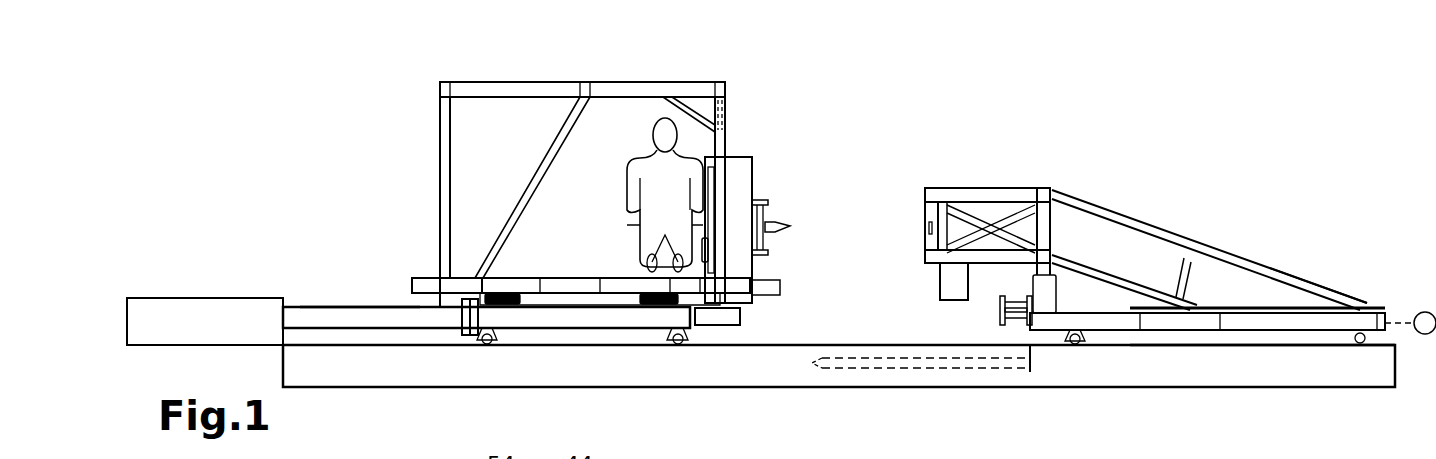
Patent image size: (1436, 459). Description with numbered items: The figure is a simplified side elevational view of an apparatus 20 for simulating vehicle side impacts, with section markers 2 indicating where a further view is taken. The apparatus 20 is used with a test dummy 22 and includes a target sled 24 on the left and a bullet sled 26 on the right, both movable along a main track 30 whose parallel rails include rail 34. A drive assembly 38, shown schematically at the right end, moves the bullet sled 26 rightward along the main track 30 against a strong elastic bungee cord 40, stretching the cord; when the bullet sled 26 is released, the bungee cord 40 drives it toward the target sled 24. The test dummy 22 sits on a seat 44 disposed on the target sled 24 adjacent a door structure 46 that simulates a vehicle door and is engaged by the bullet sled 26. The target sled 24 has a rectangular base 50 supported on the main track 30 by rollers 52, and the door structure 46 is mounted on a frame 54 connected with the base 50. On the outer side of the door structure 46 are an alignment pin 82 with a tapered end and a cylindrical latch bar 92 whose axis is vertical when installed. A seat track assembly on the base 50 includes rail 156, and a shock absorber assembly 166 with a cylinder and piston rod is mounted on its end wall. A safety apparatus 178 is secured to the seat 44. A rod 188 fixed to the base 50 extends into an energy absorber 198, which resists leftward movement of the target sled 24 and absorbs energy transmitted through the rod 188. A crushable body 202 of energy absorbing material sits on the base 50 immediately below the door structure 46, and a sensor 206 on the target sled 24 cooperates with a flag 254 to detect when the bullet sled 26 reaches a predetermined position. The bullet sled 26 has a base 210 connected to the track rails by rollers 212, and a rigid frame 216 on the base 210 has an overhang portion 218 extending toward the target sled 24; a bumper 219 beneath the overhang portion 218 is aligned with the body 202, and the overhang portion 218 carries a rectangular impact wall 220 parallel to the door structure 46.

The section line 2- 2 is at (165, 60).
The apparatus 20 is at (1156, 114).
The test dummy 22 is at (663, 178).
The target sled 24 is at (452, 78).
The bullet sled 26 is at (1186, 228).
The main track 30 is at (540, 390).
The rail 34 is at (1245, 362).
The drive assembly 38 is at (1425, 311).
The bungee cord 40 is at (885, 370).
The seat 44 is at (630, 253).
The door structure 46 is at (750, 155).
The rectangular base 50 is at (570, 315).
The rollers 52 is at (490, 342).
The frame 54 is at (438, 192).
The alignment pin 82 is at (768, 234).
The latch bar 92 is at (760, 200).
The rail 156 is at (560, 276).
The shock absorber assembly 166 is at (416, 276).
The safety apparatus 178 is at (719, 258).
The rod 188 is at (372, 305).
The energy absorber 198 is at (178, 336).
The body of energy absorbing material 202 is at (713, 318).
The sensor 206 is at (775, 290).
The base 210 is at (1320, 322).
The rollers 212 is at (1080, 345).
The rigid frame 216 is at (1290, 275).
The overhang portion 218 is at (995, 195).
The bumper 219 is at (1010, 313).
The impact wall 220 is at (925, 225).
The flag 254 is at (940, 295).